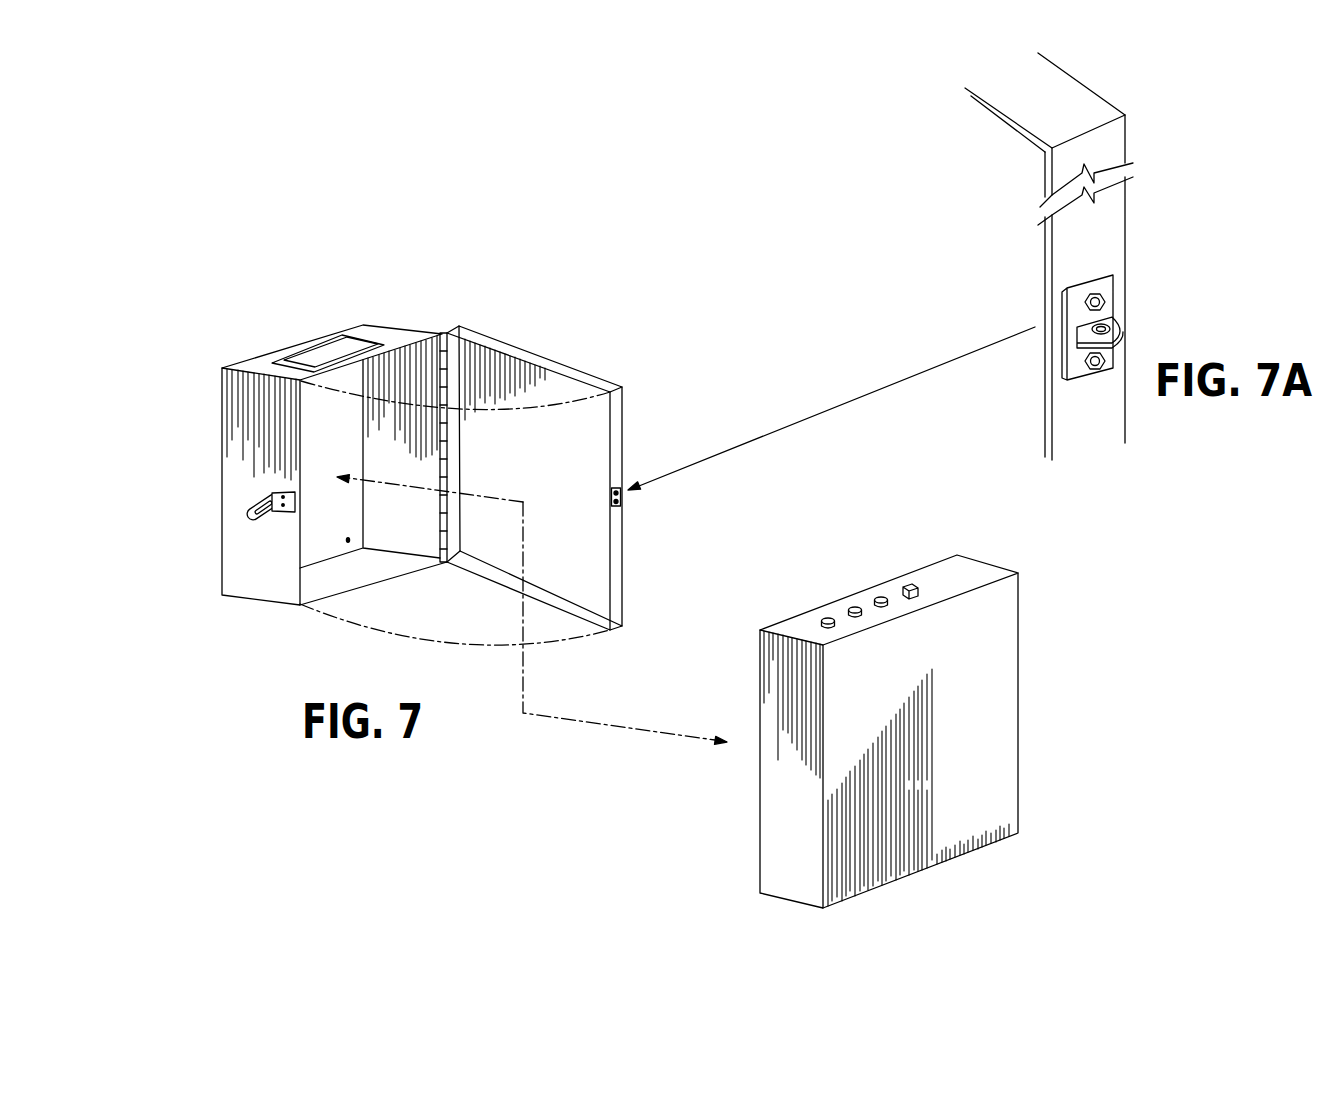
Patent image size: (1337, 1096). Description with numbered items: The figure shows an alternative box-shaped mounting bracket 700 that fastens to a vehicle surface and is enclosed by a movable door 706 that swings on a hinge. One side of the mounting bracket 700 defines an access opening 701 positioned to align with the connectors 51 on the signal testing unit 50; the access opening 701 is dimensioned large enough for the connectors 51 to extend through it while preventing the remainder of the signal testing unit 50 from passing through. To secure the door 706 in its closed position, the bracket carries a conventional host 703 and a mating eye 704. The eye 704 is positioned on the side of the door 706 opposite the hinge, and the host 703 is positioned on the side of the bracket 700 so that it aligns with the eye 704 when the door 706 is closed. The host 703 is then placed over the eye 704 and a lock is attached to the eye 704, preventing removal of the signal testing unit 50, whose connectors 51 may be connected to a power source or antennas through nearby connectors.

In FIG. 7, the box-shaped mounting bracket 700 is at (403, 322).
In FIG. 7, the access opening 701 is at (328, 352).
In FIG. 7, the host 703 is at (242, 521).
In FIG. 7, the movable door 706 is at (547, 357).
In FIG. 7A, the movable door 706 is at (1140, 131).
In FIG. 7A, the mating eye 704 is at (1150, 283).
In FIG. 7, the signal testing unit 50 is at (999, 702).
In FIG. 7, the connectors 51 is at (893, 576).